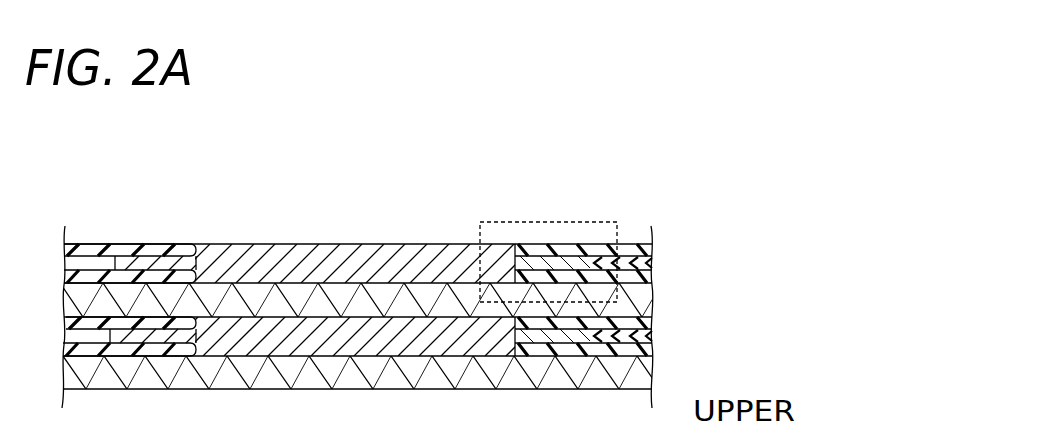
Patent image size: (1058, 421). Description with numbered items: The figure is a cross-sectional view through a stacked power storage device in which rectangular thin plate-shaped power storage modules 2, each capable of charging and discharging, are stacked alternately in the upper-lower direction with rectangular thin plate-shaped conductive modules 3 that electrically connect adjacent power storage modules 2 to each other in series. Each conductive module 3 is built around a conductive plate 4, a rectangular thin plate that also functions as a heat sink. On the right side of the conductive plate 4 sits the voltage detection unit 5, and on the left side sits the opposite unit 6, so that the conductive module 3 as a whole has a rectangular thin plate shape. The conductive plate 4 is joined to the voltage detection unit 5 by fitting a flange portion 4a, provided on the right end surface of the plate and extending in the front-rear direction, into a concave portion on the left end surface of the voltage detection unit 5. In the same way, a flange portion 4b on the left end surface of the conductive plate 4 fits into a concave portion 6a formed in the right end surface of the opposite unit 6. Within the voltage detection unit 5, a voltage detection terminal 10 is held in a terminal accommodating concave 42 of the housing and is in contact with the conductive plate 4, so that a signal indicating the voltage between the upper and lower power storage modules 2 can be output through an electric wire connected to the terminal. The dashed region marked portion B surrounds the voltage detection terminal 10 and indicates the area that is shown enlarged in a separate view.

The power storage module 2 is at (656, 298).
The conductive module 3 is at (656, 262).
The conductive plate 4 is at (330, 244).
The flange portion 4a is at (539, 258).
The flange portion 4b is at (182, 254).
The voltage detection unit 5 is at (598, 241).
The opposite unit 6 is at (95, 244).
The concave portion 6a is at (119, 266).
The voltage detection terminal 10 is at (557, 247).
The terminal accommodating concave 42 is at (634, 253).
The portion B is at (532, 222).